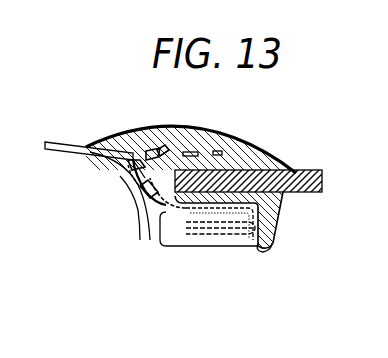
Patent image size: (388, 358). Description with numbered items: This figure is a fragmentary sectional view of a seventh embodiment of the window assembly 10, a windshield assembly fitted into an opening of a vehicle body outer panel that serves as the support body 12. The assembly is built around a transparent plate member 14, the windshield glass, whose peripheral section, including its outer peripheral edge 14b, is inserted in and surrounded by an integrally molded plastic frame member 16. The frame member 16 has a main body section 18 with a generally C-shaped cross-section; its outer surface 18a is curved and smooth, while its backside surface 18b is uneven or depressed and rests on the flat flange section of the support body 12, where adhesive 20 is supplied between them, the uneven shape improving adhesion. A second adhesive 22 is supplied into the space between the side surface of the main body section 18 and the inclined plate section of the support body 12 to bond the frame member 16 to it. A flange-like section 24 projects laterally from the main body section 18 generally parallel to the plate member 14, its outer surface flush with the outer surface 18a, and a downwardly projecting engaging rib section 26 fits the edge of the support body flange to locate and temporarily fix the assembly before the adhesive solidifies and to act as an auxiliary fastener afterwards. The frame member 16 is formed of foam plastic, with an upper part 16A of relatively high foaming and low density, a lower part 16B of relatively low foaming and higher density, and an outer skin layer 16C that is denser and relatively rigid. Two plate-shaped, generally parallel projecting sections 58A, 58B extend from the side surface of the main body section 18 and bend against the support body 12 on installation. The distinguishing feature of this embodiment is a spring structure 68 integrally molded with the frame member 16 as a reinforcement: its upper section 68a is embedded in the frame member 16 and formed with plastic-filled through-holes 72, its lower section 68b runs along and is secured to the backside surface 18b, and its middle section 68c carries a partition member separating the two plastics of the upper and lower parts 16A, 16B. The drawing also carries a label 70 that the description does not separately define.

The window assembly 10 is at (343, 128).
The support body 12 is at (247, 236).
The transparent plate member 14 is at (323, 181).
The outer peripheral edge 14b is at (138, 216).
The frame member 16 is at (281, 157).
The upper part 16A is at (216, 143).
The lower part 16B is at (178, 246).
The outer surface layer 16C is at (269, 151).
The main body section 18 is at (243, 146).
The outer surface 18a is at (196, 150).
The backside surface 18b is at (158, 216).
The adhesive 20 is at (214, 236).
The adhesive 22 is at (139, 208).
The flange-like section 24 is at (103, 147).
The engaging rib section 26 is at (280, 222).
The projecting section 58A is at (127, 165).
The projecting section 58B is at (140, 189).
The spring structure 68 is at (190, 215).
The upper section 68a is at (170, 145).
The lower section 68b is at (244, 210).
The middle section 68c is at (128, 181).
The rib 70 is at (219, 150).
The through-holes 72 is at (146, 152).